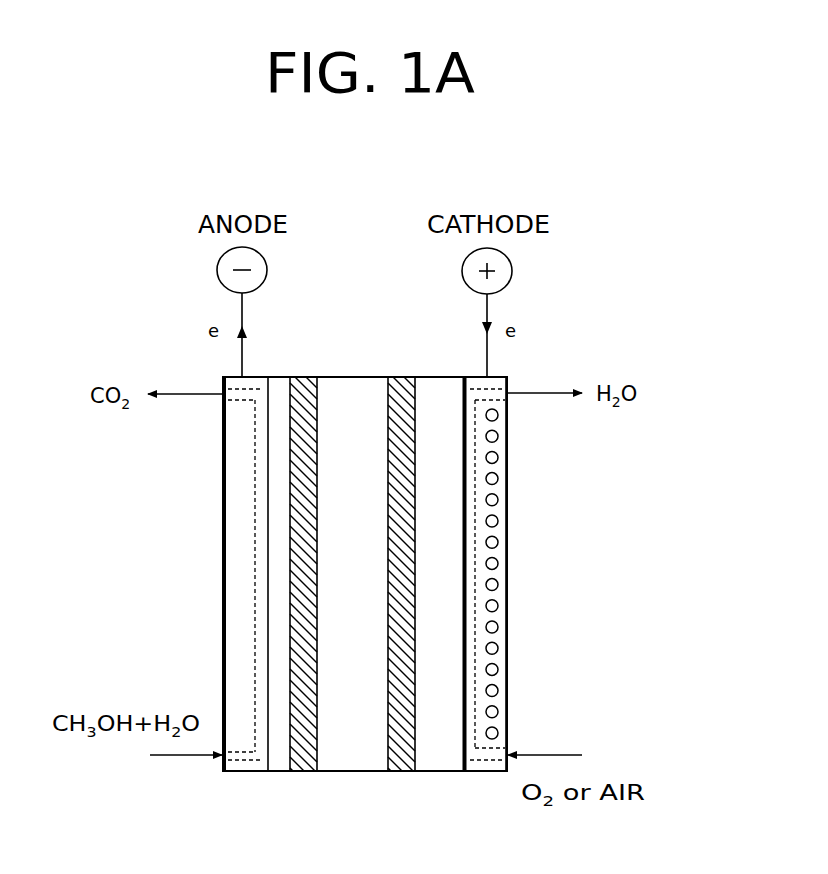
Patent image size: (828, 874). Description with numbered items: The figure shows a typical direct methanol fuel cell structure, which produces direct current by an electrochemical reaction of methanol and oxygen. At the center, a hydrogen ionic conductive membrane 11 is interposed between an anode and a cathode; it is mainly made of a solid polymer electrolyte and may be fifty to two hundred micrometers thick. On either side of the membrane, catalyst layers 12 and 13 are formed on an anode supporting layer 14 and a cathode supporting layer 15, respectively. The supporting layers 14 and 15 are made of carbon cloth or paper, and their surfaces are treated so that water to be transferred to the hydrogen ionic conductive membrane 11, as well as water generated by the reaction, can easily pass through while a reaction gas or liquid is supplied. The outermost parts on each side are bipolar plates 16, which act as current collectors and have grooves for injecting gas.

The hydrogen ionic conductive membrane 11 is at (352, 757).
The catalyst layer 12 is at (302, 772).
The catalyst layer 13 is at (400, 772).
The anode supporting layer 14 is at (280, 488).
The cathode supporting layer 15 is at (443, 490).
The bipolar plate 16 is at (243, 553).